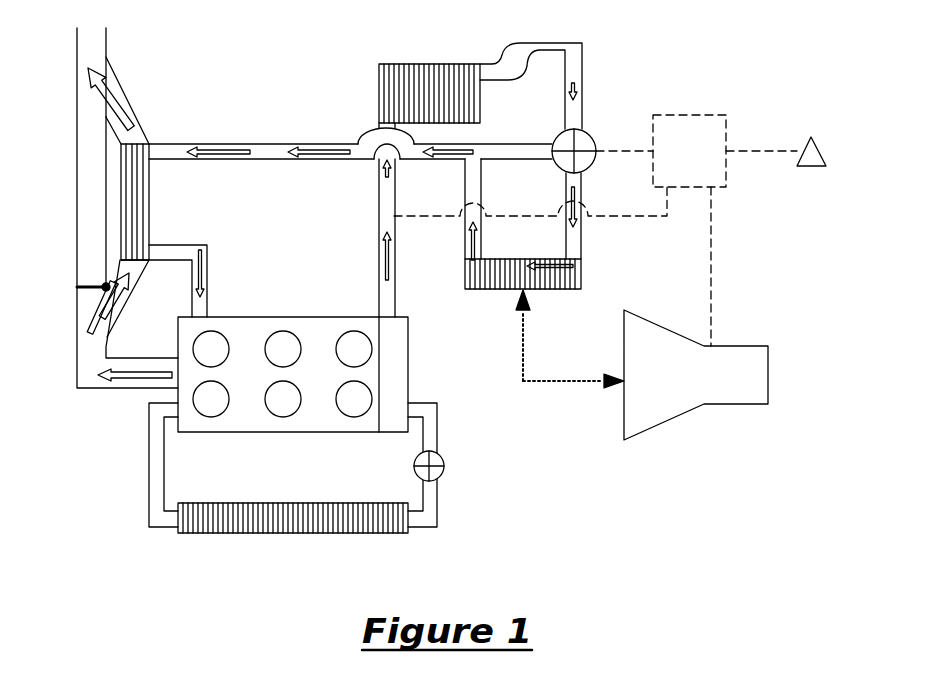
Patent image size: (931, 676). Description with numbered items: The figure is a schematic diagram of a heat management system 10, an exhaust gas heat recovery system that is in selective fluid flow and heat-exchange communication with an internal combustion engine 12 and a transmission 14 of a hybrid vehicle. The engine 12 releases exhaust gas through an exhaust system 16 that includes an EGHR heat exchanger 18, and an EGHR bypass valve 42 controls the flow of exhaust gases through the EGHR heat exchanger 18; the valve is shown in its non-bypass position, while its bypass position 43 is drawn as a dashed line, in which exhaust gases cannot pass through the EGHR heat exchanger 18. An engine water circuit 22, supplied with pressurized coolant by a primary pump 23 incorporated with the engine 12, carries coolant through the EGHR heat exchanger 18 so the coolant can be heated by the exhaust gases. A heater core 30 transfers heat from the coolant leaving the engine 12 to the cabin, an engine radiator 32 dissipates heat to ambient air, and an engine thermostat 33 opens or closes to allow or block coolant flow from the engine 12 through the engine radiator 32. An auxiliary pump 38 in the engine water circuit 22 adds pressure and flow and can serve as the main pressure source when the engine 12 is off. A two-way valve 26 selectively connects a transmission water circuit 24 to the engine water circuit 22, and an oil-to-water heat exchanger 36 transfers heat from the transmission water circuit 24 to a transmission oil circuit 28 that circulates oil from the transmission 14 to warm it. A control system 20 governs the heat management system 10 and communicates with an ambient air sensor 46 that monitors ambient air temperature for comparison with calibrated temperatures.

The heat management system 10 is at (149, 570).
The internal combustion engine 12 is at (312, 317).
The transmission 14 is at (727, 343).
The exhaust system 16 is at (150, 116).
The EGHR heat exchanger 18 is at (150, 200).
The control system 20 is at (727, 130).
The engine water circuit 22 is at (306, 128).
The primary pump 23 is at (402, 366).
The transmission water circuit 24 is at (592, 233).
The two-way valve 26 is at (592, 130).
The transmission oil circuit 28 is at (573, 384).
The heater core 30 is at (379, 83).
The engine radiator 32 is at (295, 533).
The engine thermostat 33 is at (443, 473).
The oil-to-water heat exchanger 36 is at (495, 290).
The auxiliary pump 38 is at (508, 80).
The EGHR bypass valve 42 is at (92, 290).
The bypass position 43 is at (117, 335).
The ambient air sensor 46 is at (813, 167).